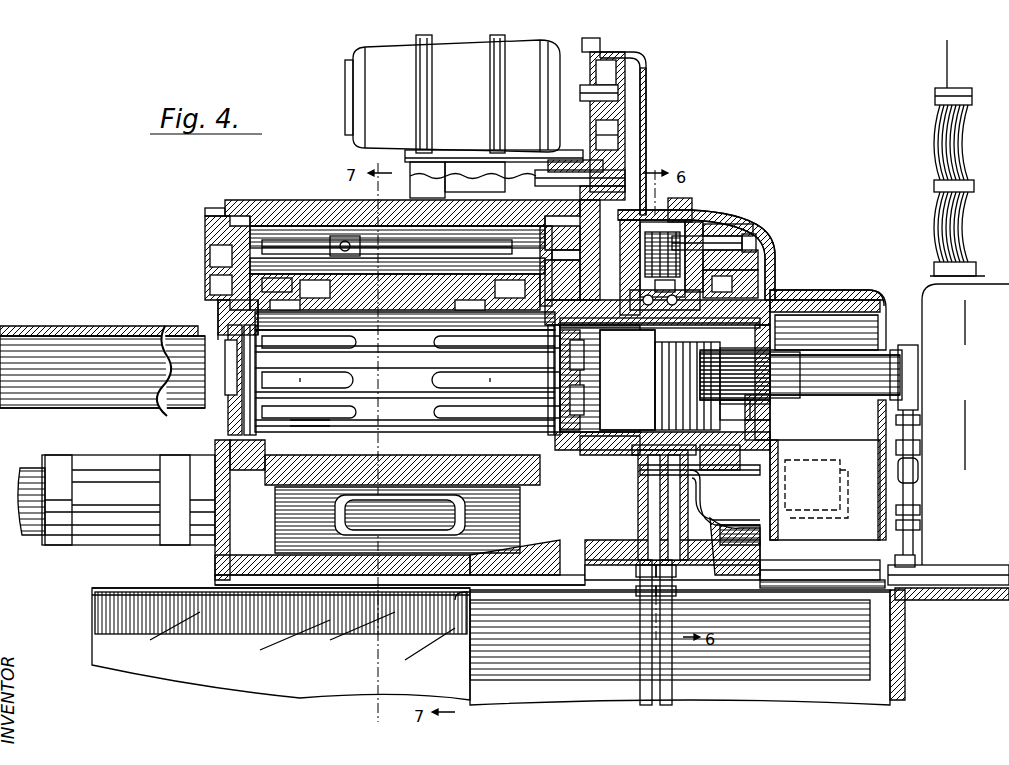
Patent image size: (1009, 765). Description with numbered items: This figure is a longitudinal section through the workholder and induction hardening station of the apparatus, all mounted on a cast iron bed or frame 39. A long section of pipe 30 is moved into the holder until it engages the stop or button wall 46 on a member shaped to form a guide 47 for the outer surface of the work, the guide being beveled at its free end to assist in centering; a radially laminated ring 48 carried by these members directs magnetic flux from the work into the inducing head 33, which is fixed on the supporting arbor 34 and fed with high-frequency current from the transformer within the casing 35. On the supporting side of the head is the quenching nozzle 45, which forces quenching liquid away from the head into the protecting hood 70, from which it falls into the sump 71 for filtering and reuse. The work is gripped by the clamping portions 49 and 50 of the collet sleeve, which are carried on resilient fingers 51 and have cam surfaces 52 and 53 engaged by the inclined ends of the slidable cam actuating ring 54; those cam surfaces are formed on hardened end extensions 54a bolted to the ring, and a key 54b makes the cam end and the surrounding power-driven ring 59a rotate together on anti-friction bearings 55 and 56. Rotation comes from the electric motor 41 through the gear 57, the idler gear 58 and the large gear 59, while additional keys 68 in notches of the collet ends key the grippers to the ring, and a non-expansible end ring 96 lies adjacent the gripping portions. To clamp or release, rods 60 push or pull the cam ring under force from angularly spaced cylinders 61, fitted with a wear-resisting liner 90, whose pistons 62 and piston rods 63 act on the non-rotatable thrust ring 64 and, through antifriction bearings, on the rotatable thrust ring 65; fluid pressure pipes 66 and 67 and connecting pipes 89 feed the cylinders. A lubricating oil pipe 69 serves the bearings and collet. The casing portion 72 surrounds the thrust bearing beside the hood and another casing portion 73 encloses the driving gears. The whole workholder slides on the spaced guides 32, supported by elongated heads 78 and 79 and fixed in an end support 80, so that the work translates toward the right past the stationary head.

The pipe 30 is at (110, 334).
The spaced guides 32 is at (33, 472).
The inducing head 33 is at (652, 407).
The supporting arbor 34 is at (870, 385).
The casing 35 is at (932, 166).
The bed or frame 39 is at (320, 665).
The electric motor 41 is at (470, 103).
The quenching nozzle 45 is at (705, 374).
The stop or button wall 46 is at (770, 408).
The guide 47 is at (755, 408).
The radially laminated ring 48 is at (770, 426).
The work clamping portion 49 is at (562, 420).
The work clamping portion 50 is at (240, 425).
The resilient fingers 51 is at (336, 408).
The cam surface 52 is at (258, 428).
The cam surface 53 is at (548, 428).
The cam actuating ring 54 is at (352, 292).
The hardened end extensions 54a is at (340, 256).
The key 54b is at (287, 286).
The anti-friction bearing 55 is at (210, 235).
The anti-friction bearing 56 is at (540, 264).
The gear 57 is at (620, 120).
The idler gear 58 is at (618, 138).
The large gear 59 is at (618, 540).
The power-driven ring 59a is at (432, 470).
The rods 60 is at (638, 448).
The cylinders 61 is at (672, 208).
The pistons 62 is at (646, 220).
The piston rods 63 is at (722, 238).
The non-rotatable thrust ring 64 is at (760, 258).
The rotatable thrust ring 65 is at (762, 278).
The fluid pressure pipe 66 is at (646, 705).
The fluid pressure pipe 67 is at (668, 708).
The keys 68 is at (212, 382).
The lubricating oil pipe 69 is at (452, 226).
The protecting hood 70 is at (830, 305).
The sump 71 is at (851, 666).
The casing portion 72 is at (752, 236).
The casing portion 73 is at (628, 70).
The elongated head 78 is at (733, 540).
The elongated head 79 is at (128, 470).
The end support 80 is at (835, 568).
The fluid pressure pipes 89 is at (700, 475).
The wear-resisting liner 90 is at (660, 230).
The non-expansible end ring 96 is at (216, 308).